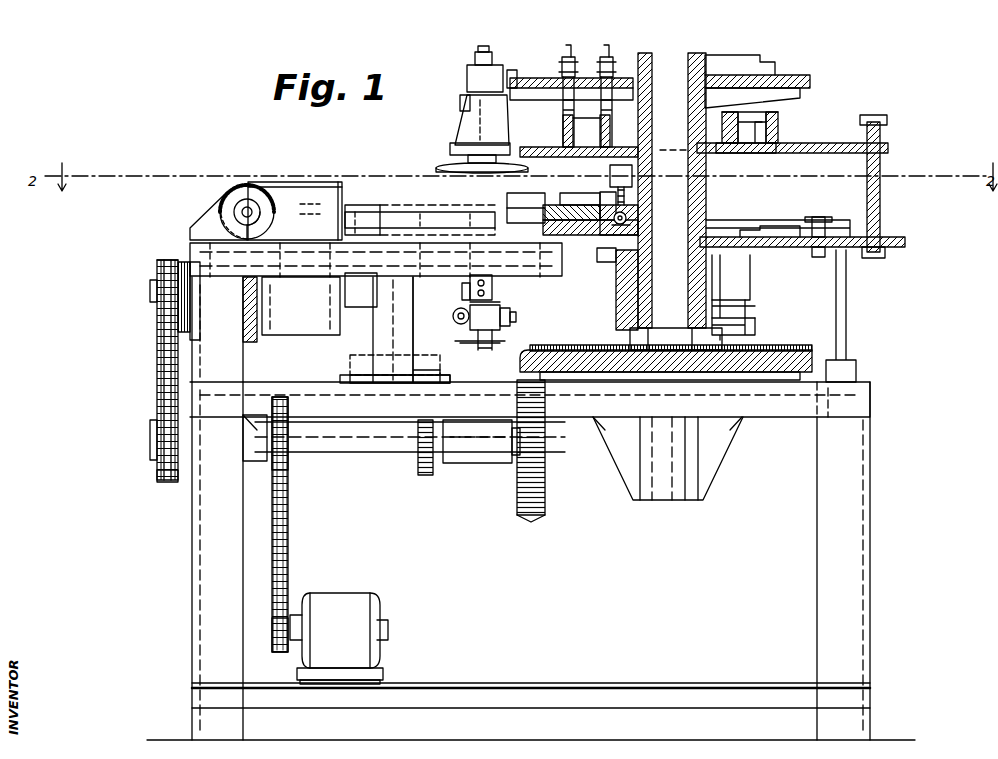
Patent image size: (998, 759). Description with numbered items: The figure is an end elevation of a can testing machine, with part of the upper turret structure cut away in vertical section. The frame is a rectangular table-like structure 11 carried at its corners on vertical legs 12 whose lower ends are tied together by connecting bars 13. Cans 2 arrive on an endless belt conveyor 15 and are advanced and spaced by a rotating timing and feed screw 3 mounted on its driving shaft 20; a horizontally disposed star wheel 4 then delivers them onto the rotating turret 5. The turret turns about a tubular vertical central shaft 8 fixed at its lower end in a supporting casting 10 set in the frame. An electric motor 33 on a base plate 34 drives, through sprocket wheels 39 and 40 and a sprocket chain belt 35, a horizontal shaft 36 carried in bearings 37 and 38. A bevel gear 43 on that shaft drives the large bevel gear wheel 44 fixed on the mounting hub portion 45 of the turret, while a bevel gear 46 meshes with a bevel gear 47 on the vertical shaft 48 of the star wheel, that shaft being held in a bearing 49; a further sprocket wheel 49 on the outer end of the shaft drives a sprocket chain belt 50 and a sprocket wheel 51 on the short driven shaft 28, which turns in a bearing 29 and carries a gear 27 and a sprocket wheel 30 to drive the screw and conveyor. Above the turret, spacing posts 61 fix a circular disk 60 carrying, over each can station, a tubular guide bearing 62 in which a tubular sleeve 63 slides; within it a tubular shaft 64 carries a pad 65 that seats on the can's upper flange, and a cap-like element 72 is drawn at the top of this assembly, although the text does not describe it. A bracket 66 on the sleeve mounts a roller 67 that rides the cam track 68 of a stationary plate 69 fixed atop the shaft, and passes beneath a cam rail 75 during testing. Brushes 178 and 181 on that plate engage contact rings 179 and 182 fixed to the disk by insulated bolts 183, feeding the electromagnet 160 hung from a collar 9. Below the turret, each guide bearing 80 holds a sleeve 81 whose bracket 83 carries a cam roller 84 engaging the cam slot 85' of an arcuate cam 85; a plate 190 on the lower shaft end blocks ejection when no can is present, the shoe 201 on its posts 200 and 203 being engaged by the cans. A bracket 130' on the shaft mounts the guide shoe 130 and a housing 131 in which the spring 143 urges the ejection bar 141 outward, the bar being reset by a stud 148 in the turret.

The cans 2 is at (318, 183).
The timing and feed screw 3 is at (242, 187).
The star wheel 4 is at (382, 211).
The turret 5 is at (905, 242).
The vertical central shaft 8 is at (690, 54).
The collar 9 is at (710, 226).
The supporting casting 10 is at (618, 468).
The table-like structure 11 is at (815, 405).
The vertical legs 12 is at (192, 620).
The connecting bars 13 is at (470, 683).
The endless belt conveyor 15 is at (282, 326).
The driving shaft 20 is at (234, 212).
The gear 27 is at (180, 262).
The driven shaft 28 is at (151, 290).
The bearing 29 is at (185, 326).
The sprocket wheel 30 is at (168, 300).
The electric motor 33 is at (352, 600).
The base plate 34 is at (376, 679).
The sprocket chain belt 35 is at (288, 525).
The horizontal shaft 36 is at (151, 440).
The bearing 37 is at (258, 462).
The bearing 38 is at (458, 464).
The sprocket wheel 39 is at (273, 640).
The sprocket wheel 40 is at (290, 465).
The bevel gear 43 is at (535, 516).
The bevel gear wheel 44 is at (590, 360).
The mounting hub portion 45 is at (616, 280).
The bevel gear 46 is at (423, 476).
The bevel gear 47 is at (345, 377).
The vertical shaft 48 is at (380, 360).
The bearing / sprocket wheel 49 is at (160, 478).
The sprocket chain belt 50 is at (158, 376).
The sprocket wheel 51 is at (160, 262).
The circular plate or disk 60 is at (888, 150).
The spacing posts 61 is at (882, 214).
The tubular guide bearing 62 is at (458, 128).
The tubular sleeve 63 is at (460, 103).
The tubular shaft 64 is at (488, 36).
The disk or pad 65 is at (452, 172).
The bracket 66 is at (467, 80).
The roller 67 is at (514, 70).
The cam track 68 is at (820, 85).
The stationary plate or disk 69 is at (522, 78).
The cap 72 is at (474, 60).
The cam rail 75 is at (775, 62).
The tubular guide bearing 80 is at (493, 283).
The sleeve 81 is at (496, 303).
The bracket 83 is at (514, 315).
The cam roller 84 is at (502, 326).
The arcuate cam 85 is at (754, 331).
The cam slot 85' is at (756, 310).
The ejection guide shoe 130 is at (515, 200).
The bracket 130' is at (562, 221).
The housing 131 is at (602, 200).
The bar 141 is at (640, 214).
The coiled spring 143 is at (636, 226).
The stud 148 is at (818, 230).
The electromagnet 160 is at (633, 172).
The brush 178 is at (570, 76).
The contact ring 179 is at (563, 126).
The brush 181 is at (610, 58).
The contact ring 182 is at (600, 128).
The bolts 183 is at (592, 158).
The plate 190 is at (463, 343).
The post 200 is at (752, 288).
The shoe 201 is at (777, 218).
The post 203 is at (847, 305).